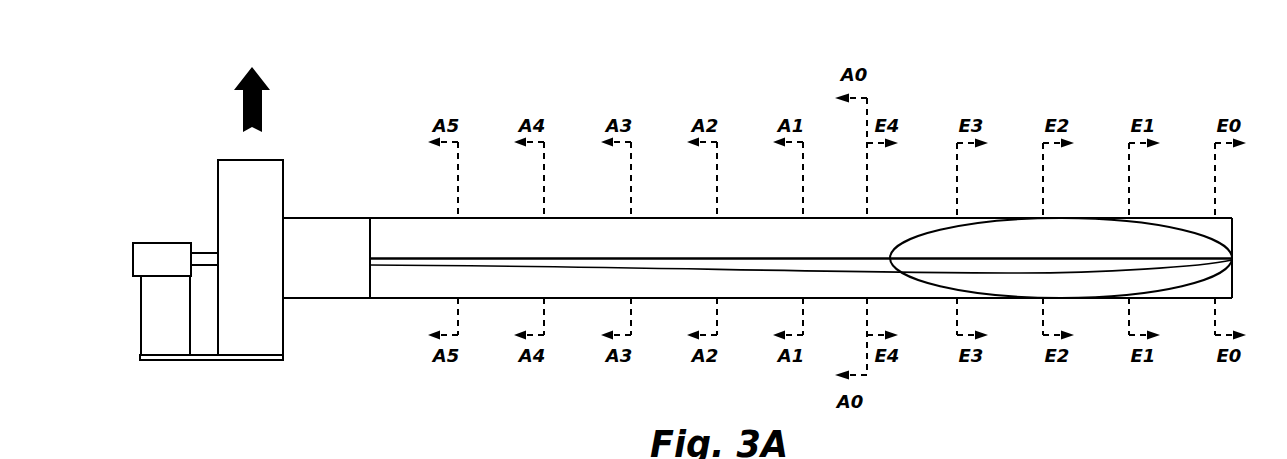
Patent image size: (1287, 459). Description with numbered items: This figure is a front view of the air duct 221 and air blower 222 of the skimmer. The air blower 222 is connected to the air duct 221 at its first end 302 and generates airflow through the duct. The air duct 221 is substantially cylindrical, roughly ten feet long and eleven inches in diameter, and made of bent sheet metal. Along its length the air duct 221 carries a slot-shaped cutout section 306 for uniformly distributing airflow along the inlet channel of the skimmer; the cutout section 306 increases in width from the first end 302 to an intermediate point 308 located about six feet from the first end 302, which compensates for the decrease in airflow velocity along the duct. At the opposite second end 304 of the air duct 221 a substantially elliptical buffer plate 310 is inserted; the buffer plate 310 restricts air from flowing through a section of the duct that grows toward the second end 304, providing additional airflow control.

The air blower 222 is at (228, 208).
The first end 302 is at (290, 217).
The air duct 221 is at (442, 232).
The cutout section 306 is at (617, 264).
The intermediate point 308 is at (887, 228).
The buffer plate 310 is at (1122, 230).
The second end 304 is at (1232, 272).